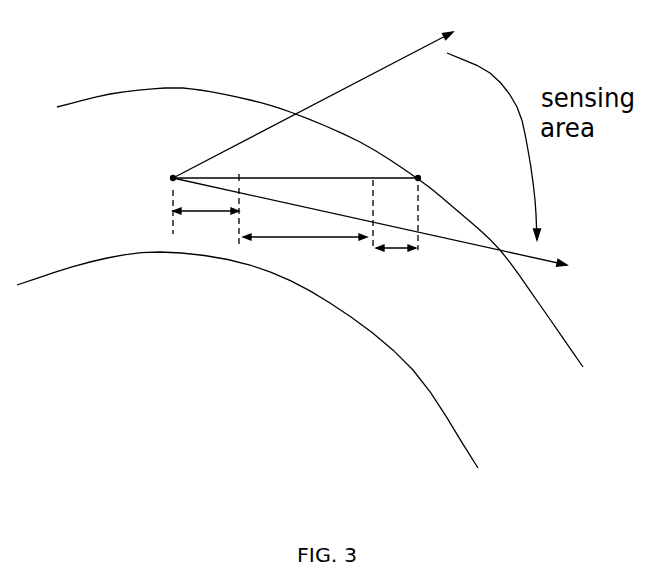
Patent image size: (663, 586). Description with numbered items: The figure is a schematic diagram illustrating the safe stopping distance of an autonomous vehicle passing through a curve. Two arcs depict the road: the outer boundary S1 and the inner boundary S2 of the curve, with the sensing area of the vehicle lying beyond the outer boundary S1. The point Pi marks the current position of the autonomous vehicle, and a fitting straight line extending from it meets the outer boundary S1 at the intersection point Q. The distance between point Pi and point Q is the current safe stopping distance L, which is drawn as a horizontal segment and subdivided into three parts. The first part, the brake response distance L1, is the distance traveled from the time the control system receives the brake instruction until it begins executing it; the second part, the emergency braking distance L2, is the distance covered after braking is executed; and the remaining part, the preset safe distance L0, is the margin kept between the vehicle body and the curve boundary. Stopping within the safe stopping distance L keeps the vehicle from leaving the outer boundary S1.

The outer boundary of the curve S1 is at (326, 244).
The inner boundary of the curve S2 is at (254, 374).
The current position point Pi is at (358, 149).
The intersection point Q is at (429, 169).
The current safe stopping distance L is at (295, 165).
The brake response distance L1 is at (206, 216).
The emergency braking distance L2 is at (305, 253).
The preset safe distance L0 is at (395, 232).